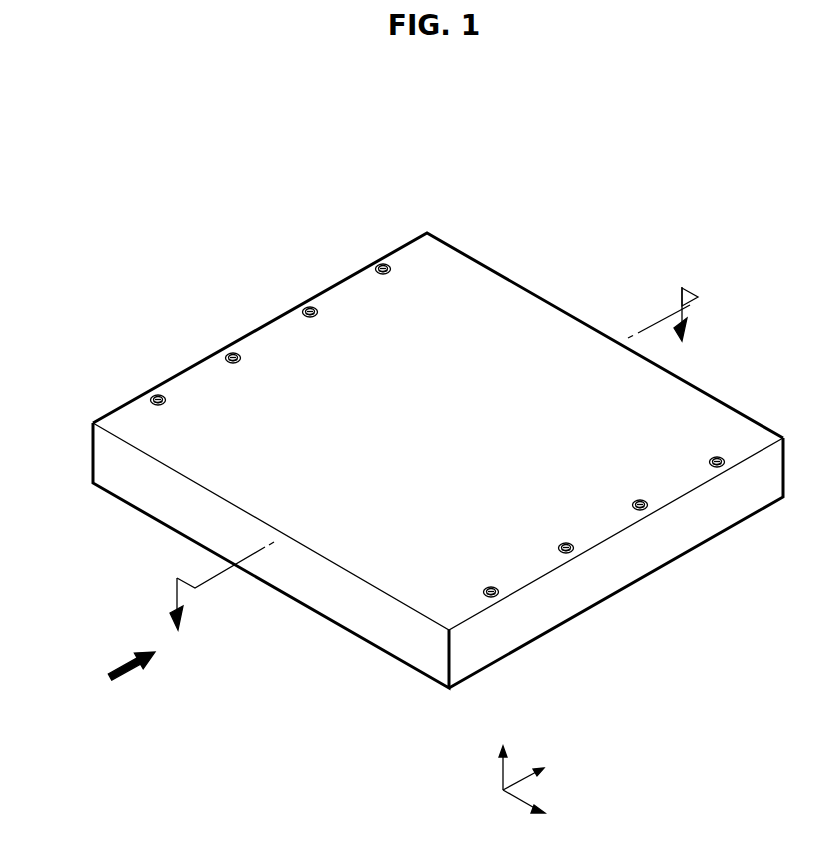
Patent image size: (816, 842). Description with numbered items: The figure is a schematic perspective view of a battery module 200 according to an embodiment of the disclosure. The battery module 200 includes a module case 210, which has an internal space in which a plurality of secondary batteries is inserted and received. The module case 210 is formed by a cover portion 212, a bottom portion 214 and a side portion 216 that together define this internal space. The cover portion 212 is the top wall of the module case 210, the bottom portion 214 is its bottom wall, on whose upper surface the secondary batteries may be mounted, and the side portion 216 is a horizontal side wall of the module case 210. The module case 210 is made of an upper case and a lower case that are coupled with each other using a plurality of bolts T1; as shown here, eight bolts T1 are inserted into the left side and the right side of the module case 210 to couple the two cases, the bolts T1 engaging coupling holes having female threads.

The battery module 200 is at (118, 124).
The module case 210 is at (251, 326).
The cover portion 212 is at (482, 330).
The bottom portion 214 is at (402, 662).
The side portion 216 is at (612, 582).
The bolts T1 is at (376, 267).